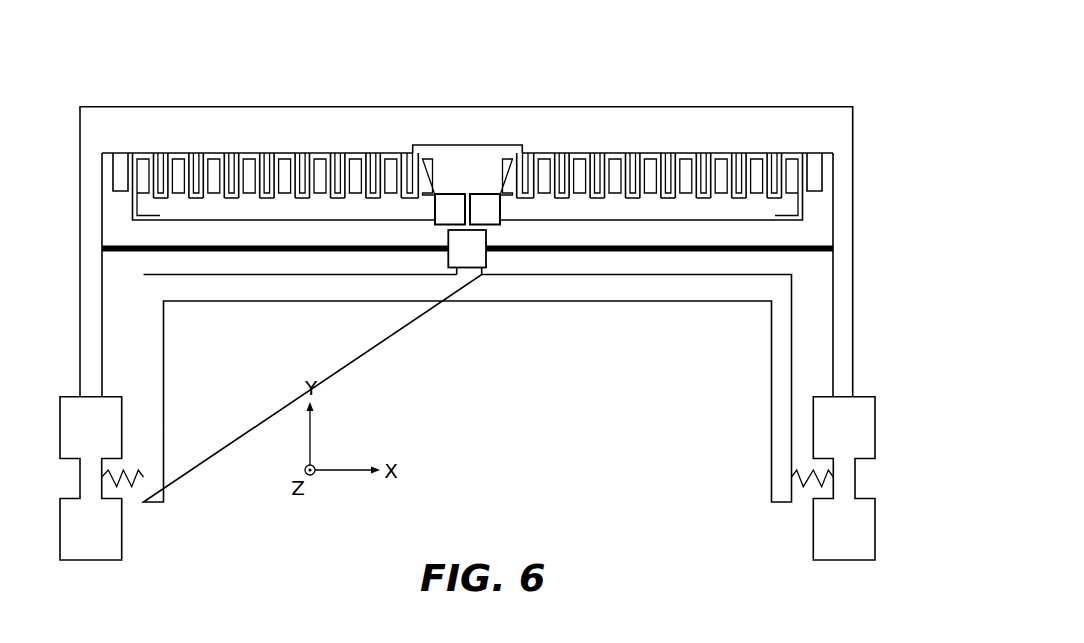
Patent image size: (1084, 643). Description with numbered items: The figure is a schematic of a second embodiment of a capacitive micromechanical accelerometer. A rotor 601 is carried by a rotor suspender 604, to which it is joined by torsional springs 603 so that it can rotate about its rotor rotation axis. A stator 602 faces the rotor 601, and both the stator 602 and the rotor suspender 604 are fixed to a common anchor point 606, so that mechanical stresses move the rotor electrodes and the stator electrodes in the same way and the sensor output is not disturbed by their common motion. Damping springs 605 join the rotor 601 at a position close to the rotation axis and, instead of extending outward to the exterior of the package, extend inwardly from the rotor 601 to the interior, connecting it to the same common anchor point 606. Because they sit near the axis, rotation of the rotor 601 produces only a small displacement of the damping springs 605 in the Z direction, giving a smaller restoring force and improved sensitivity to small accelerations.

The rotor 601 is at (520, 95).
The stator 602 is at (282, 146).
The torsional springs 603 is at (137, 502).
The rotor suspender 604 is at (539, 312).
The damping springs 605 is at (298, 264).
The common anchor point 606 is at (467, 239).